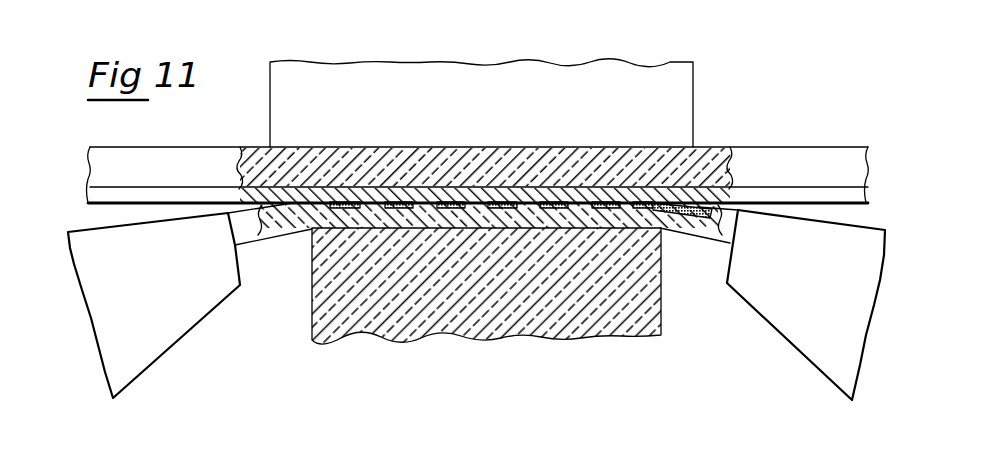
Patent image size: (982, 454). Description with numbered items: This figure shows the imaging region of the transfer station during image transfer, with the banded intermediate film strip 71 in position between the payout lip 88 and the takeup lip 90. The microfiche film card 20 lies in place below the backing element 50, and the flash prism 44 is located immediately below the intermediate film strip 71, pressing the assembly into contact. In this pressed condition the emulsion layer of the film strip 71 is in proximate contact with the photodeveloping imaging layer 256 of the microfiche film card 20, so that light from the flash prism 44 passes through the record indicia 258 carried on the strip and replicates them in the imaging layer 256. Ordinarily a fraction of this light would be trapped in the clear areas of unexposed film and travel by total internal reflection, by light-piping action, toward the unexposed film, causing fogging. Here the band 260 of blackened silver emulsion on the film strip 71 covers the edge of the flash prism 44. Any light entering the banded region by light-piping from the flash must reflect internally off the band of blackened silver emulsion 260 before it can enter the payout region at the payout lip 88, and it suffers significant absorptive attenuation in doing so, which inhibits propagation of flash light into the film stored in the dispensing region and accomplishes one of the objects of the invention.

The microfiche film card 20 is at (815, 176).
The backing element 50 is at (270, 112).
The photodeveloping imaging layer 256 is at (699, 190).
The intermediate film strip 71 is at (727, 245).
The record indicia 258 is at (659, 210).
The band of blackened silver emulsion 260 is at (688, 216).
The flash prism 44 is at (662, 304).
The takeup lip 90 is at (213, 312).
The payout lip 88 is at (762, 323).